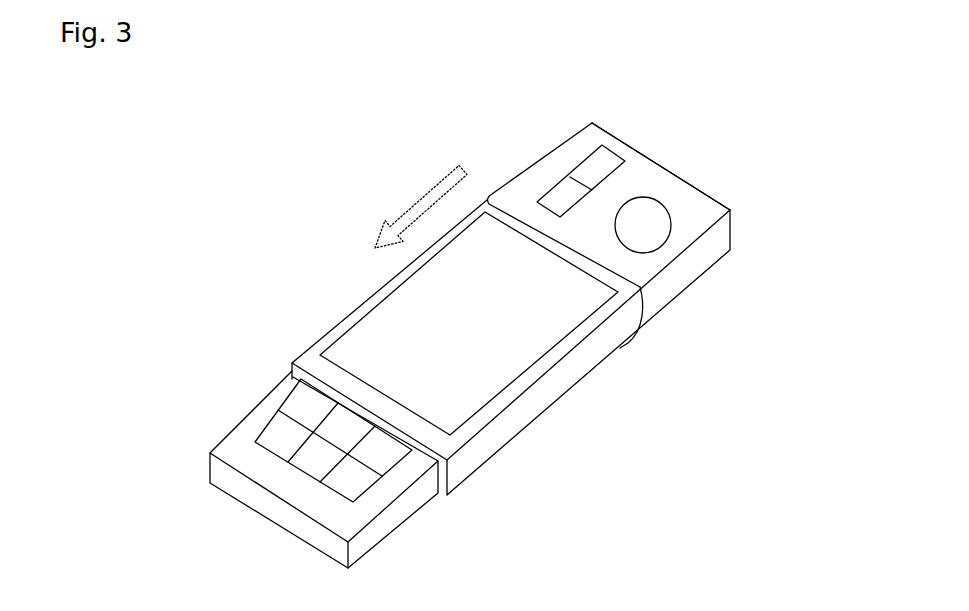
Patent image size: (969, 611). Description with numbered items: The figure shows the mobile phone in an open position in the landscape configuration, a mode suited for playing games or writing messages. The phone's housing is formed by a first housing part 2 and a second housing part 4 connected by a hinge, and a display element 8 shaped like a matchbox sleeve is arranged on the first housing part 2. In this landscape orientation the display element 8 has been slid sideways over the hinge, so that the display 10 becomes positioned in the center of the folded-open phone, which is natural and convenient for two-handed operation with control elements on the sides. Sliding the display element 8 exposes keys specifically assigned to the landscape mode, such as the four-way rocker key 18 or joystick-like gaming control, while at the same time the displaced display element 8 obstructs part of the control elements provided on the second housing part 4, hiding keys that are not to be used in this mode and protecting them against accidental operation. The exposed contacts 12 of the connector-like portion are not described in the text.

The first housing part 2 is at (645, 175).
The second housing part 4 is at (217, 473).
The display element 8 is at (535, 408).
The display 10 is at (440, 328).
The electrical contacts 12 is at (310, 413).
The rocker key 18 is at (648, 226).